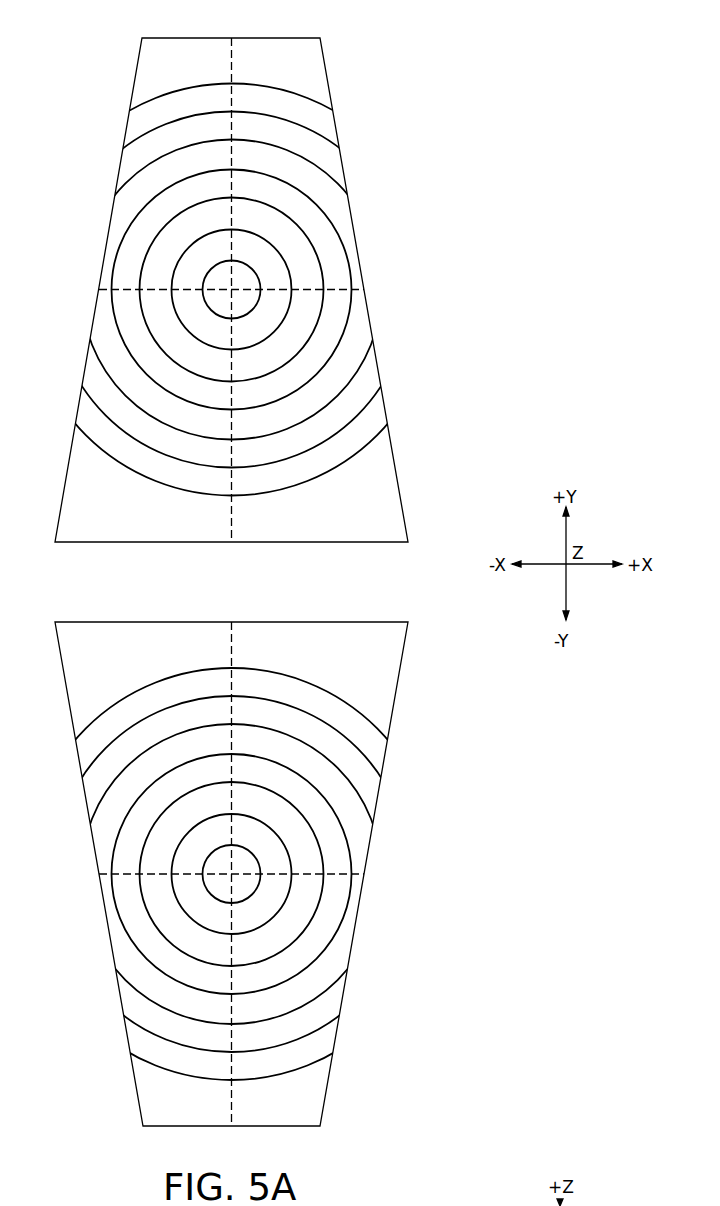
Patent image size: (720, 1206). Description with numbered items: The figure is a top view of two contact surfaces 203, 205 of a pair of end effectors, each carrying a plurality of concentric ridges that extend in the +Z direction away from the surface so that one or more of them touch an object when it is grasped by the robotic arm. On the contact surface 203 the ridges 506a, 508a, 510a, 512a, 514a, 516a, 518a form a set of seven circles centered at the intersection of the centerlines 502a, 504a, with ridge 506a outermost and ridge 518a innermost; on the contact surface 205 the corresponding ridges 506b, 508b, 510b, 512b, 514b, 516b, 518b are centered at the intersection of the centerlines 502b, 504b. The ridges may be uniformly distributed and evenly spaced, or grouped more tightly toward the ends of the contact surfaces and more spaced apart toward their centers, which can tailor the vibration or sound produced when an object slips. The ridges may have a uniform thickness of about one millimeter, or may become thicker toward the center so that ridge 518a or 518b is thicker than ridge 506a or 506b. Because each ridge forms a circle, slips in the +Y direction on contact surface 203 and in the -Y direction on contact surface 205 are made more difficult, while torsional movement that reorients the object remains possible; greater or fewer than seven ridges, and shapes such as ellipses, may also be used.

The contact surface 203 is at (175, 38).
The contact surface 205 is at (150, 1126).
The centerline 502a is at (116, 290).
The centerline 502b is at (106, 875).
The centerline 504a is at (233, 512).
The centerline 504b is at (231, 644).
The ridge 506a is at (302, 95).
The ridge 506b is at (318, 1062).
The ridge 508a is at (322, 138).
The ridge 508b is at (330, 1022).
The ridge 510a is at (330, 178).
The ridge 510b is at (338, 980).
The ridge 512a is at (335, 228).
The ridge 512b is at (345, 918).
The ridge 514a is at (322, 278).
The ridge 514b is at (322, 868).
The ridge 516a is at (291, 302).
The ridge 516b is at (286, 845).
The ridge 518a is at (206, 268).
The ridge 518b is at (208, 896).